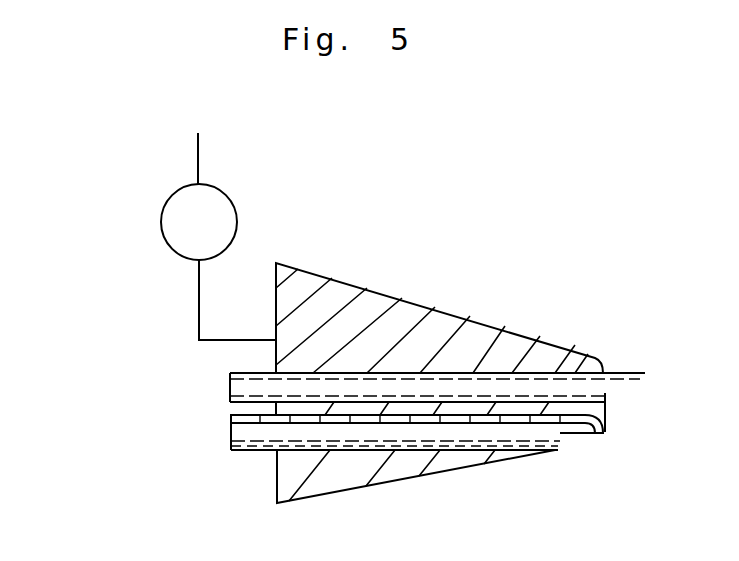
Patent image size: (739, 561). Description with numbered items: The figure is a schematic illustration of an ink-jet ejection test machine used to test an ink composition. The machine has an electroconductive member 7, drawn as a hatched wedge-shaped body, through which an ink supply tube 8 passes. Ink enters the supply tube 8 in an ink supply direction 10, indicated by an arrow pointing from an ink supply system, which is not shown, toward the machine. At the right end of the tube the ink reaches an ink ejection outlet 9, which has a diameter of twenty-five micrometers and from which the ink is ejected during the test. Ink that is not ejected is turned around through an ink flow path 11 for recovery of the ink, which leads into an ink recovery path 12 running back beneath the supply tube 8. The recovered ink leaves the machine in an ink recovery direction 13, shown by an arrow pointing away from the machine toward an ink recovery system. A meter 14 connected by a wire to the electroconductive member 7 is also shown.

The electroconductive member 7 is at (403, 320).
The ink supply tube 8 is at (495, 390).
The ink ejection outlet 9 is at (605, 400).
The ink supply direction 10 is at (204, 395).
The ink flow path for recovery of the ink 11 is at (585, 432).
The ink recovery path 12 is at (263, 433).
The ink recovery direction 13 is at (218, 435).
The voltmeter 14 is at (230, 212).